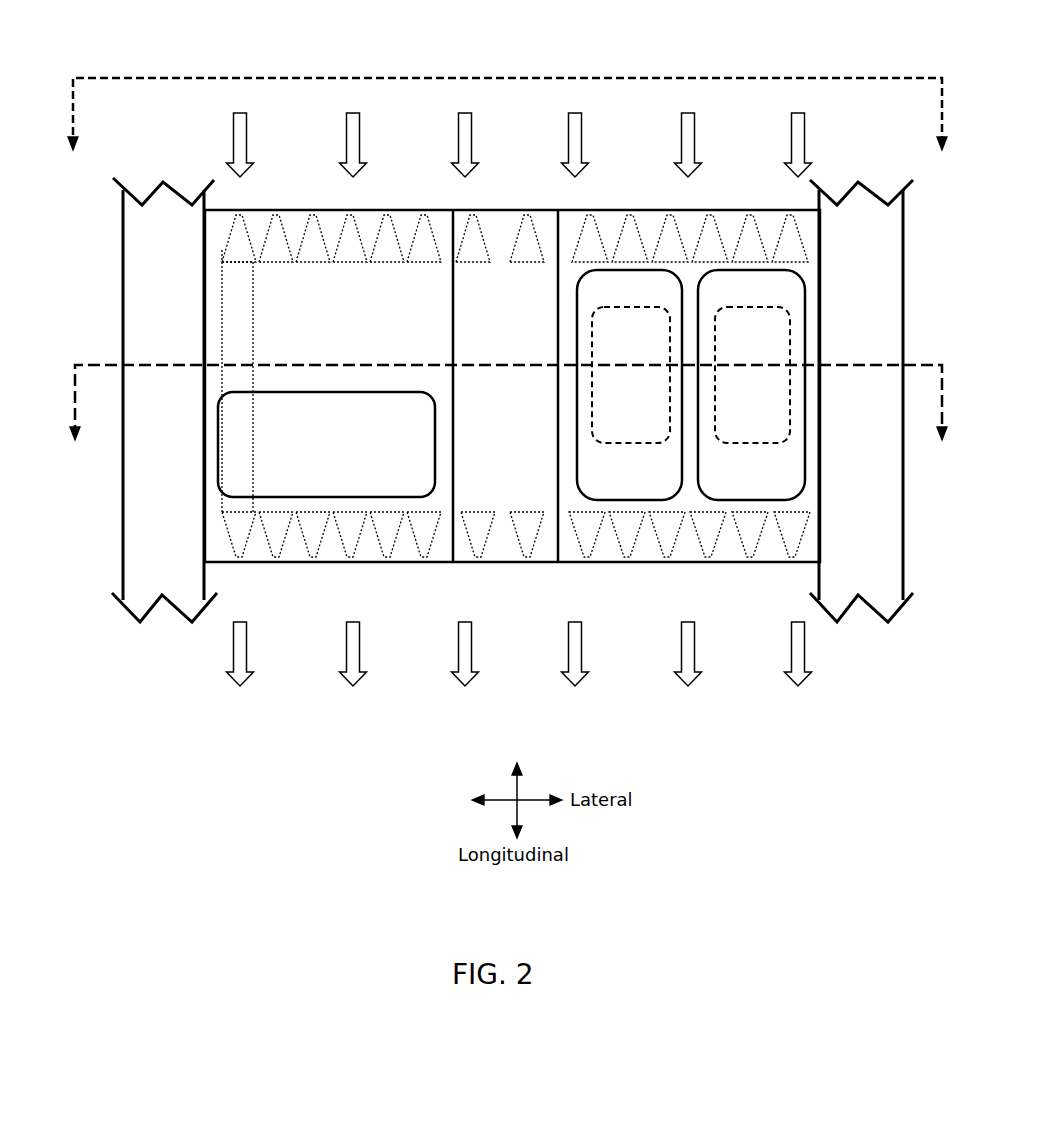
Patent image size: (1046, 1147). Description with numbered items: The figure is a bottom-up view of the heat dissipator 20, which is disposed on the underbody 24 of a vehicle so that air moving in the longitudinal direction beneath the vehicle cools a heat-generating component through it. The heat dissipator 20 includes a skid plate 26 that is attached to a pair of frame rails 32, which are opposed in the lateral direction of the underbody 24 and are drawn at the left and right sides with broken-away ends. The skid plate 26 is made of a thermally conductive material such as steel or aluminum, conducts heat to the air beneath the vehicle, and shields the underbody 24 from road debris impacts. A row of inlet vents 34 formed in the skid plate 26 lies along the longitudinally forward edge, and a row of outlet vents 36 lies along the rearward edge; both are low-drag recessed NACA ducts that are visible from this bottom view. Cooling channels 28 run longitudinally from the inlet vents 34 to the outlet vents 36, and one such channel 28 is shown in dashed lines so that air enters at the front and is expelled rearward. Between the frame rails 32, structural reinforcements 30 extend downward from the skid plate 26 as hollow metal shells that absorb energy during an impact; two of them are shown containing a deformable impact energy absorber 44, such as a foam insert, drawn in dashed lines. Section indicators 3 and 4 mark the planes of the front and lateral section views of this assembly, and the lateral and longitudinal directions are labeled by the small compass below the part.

The heat dissipator 20 is at (764, 58).
The section line 3- 3 is at (507, 130).
The section line 4- 4 is at (509, 418).
The underbody 24 is at (80, 658).
The skid plate 26 is at (250, 355).
The cooling channels 28 is at (222, 305).
The structural reinforcements 30 is at (265, 485).
The frame rails 32 is at (145, 222).
The inlet vents 34 is at (238, 236).
The outlet vents 36 is at (235, 532).
The deformable impact energy absorber 44 is at (631, 306).